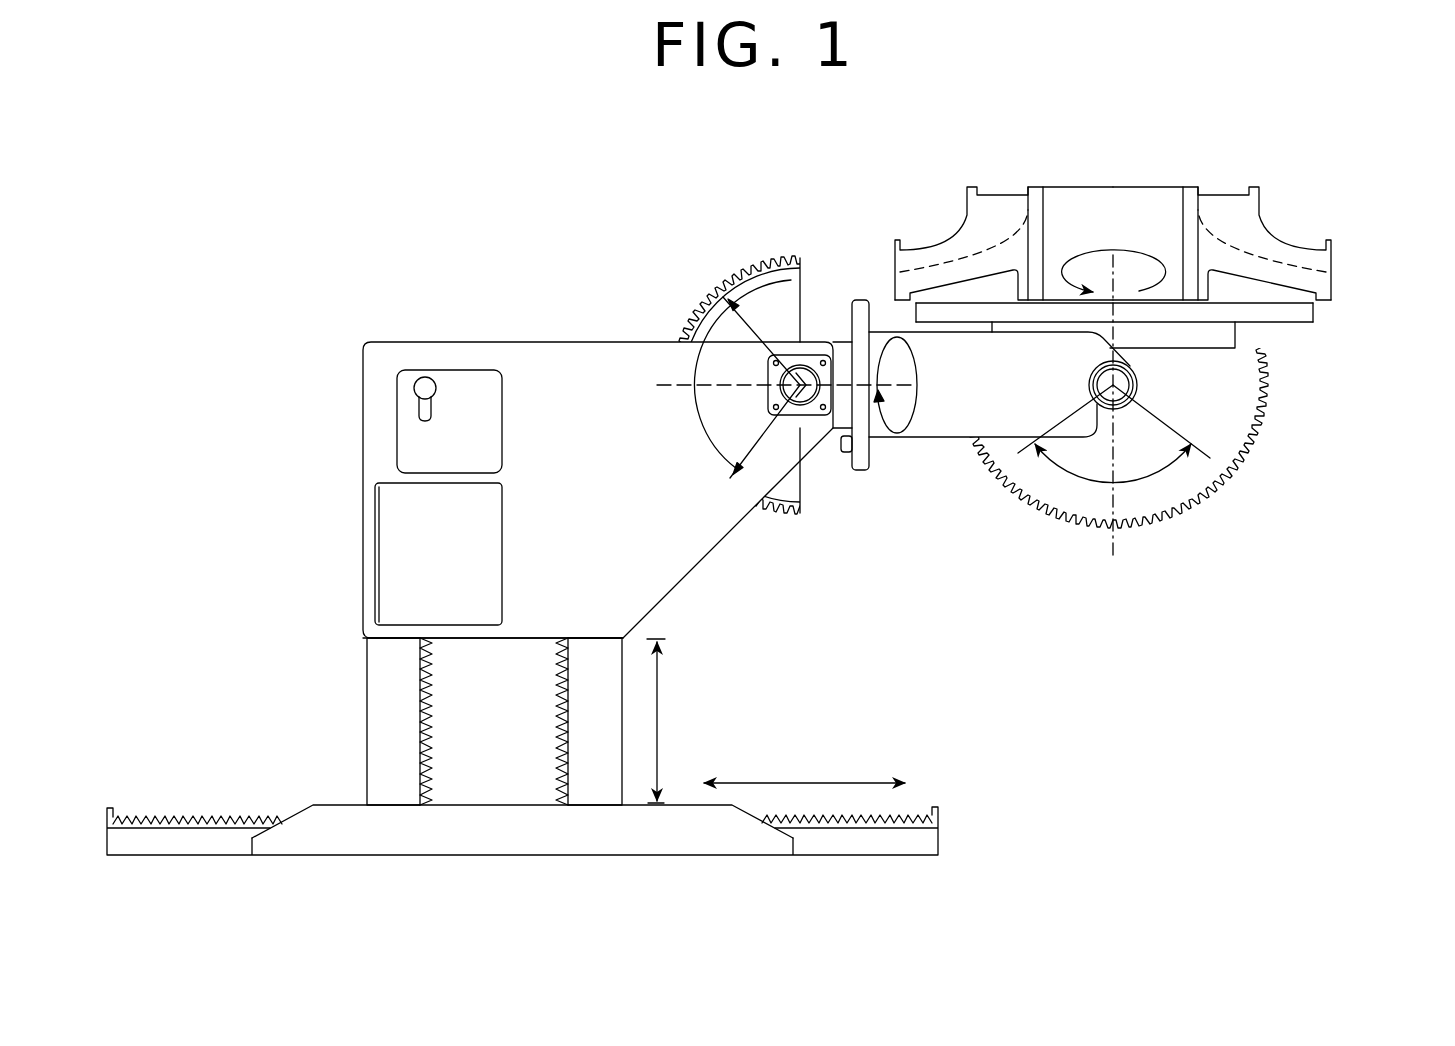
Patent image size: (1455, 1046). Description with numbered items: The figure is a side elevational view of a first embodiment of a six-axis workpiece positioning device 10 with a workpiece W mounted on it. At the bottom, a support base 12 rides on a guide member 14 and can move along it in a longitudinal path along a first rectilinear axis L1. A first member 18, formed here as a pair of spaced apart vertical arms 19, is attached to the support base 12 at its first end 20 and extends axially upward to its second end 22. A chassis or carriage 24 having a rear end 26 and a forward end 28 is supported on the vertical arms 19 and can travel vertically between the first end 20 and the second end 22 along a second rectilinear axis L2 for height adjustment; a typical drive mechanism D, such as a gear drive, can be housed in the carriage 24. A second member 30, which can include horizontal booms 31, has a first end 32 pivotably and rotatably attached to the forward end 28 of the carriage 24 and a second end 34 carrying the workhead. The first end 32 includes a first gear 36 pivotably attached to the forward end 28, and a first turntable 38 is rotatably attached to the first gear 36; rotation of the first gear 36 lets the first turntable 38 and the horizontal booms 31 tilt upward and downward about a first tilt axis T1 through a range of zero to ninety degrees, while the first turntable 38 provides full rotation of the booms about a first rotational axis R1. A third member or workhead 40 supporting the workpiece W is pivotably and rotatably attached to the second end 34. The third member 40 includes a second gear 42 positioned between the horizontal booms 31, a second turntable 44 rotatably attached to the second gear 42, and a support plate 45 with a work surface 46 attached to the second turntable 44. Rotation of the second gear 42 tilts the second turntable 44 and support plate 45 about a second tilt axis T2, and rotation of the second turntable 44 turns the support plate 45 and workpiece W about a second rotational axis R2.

The positioning device 10 is at (253, 130).
The support base 12 is at (680, 802).
The guide member 14 is at (878, 848).
The first member 18 is at (356, 762).
The vertical arms 19 is at (368, 695).
The first end 20 is at (366, 803).
The second end 22 is at (366, 643).
The carriage 24 is at (361, 340).
The rear end 26 is at (365, 492).
The forward end 28 is at (835, 430).
The second member 30 is at (868, 472).
The horizontal booms 31 is at (948, 440).
The first end 32 is at (849, 452).
The second end 34 is at (1140, 386).
The first gear 36 is at (795, 257).
The first turntable 38 is at (838, 338).
The third member 40 is at (1319, 311).
The second gear 42 is at (1255, 438).
The second turntable 44 is at (1268, 348).
The support plate 45 is at (1314, 319).
The work surface 46 is at (1315, 303).
The drive mechanism D is at (387, 556).
The first tilt axis T1 is at (688, 378).
The second tilt axis T2 is at (1117, 497).
The first rotational axis R1 is at (925, 380).
The second rotational axis R2 is at (1118, 250).
The first rectilinear axis L1 is at (805, 783).
The second rectilinear axis L2 is at (660, 717).
The workpiece W is at (1222, 193).